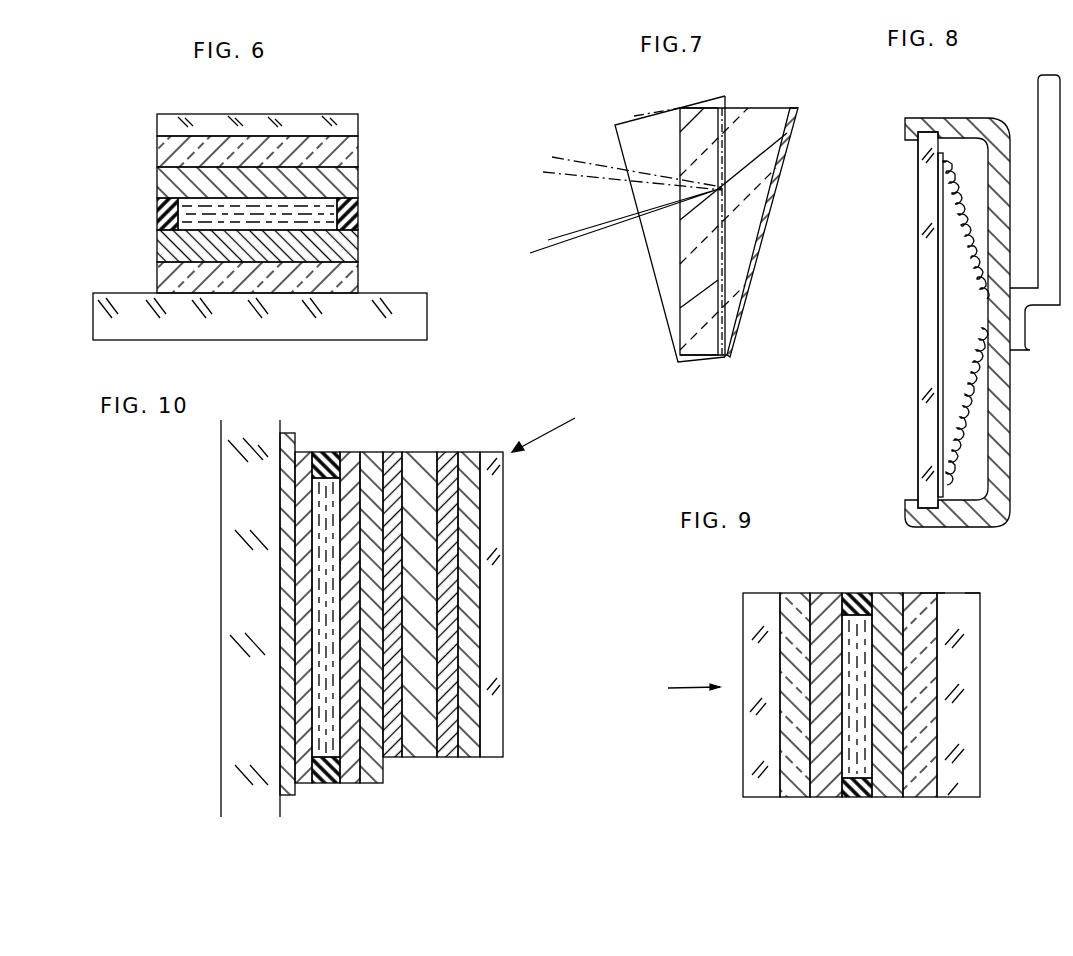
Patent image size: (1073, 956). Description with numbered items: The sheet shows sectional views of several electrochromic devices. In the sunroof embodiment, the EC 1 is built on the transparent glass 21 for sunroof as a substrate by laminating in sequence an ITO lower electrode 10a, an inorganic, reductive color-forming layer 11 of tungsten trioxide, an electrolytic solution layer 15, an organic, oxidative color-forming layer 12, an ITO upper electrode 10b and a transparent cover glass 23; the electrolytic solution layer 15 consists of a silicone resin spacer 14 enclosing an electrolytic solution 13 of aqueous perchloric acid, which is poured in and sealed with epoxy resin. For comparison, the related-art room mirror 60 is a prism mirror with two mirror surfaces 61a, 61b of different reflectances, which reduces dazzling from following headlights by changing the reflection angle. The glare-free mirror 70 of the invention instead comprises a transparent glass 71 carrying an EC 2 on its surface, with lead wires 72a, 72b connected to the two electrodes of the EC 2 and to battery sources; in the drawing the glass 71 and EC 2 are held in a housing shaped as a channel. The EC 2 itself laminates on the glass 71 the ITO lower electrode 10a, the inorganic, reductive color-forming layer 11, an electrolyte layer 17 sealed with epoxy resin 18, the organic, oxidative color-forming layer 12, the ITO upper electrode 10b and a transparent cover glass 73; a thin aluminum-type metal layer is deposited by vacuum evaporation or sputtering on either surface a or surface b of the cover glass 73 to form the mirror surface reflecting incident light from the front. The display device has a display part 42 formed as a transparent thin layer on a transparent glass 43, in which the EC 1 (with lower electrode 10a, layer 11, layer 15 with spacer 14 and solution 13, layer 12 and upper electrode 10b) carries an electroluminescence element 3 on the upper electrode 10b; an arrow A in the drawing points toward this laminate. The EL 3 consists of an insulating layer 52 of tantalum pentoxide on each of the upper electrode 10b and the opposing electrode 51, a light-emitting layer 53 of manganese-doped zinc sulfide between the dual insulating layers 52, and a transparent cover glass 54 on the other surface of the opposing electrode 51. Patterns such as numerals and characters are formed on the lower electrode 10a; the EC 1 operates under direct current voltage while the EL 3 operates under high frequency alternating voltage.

In FIG. 10, the EC 1 is at (341, 613).
In FIG. 8, the EC 2 is at (943, 314).
In FIG. 10, the electroluminescence element 3 is at (440, 585).
In FIG. 6, the ITO lower electrode 10a is at (358, 274).
In FIG. 10, the ITO lower electrode 10a is at (290, 796).
In FIG. 9, the ITO lower electrode 10a is at (785, 796).
In FIG. 6, the ITO upper electrode 10b is at (358, 149).
In FIG. 10, the ITO upper electrode 10b is at (375, 785).
In FIG. 9, the ITO upper electrode 10b is at (917, 796).
In FIG. 6, the inorganic, reductive color-forming layer 11 is at (354, 242).
In FIG. 10, the inorganic, reductive color-forming layer 11 is at (304, 785).
In FIG. 9, the inorganic, reductive color-forming layer 11 is at (824, 796).
In FIG. 6, the organic, oxidative color-forming layer 12 is at (354, 179).
In FIG. 10, the organic, oxidative color-forming layer 12 is at (350, 785).
In FIG. 9, the organic, oxidative color-forming layer 12 is at (892, 796).
In FIG. 6, the electrolytic solution 13 is at (257, 204).
In FIG. 10, the electrolytic solution 13 is at (326, 617).
In FIG. 6, the spacer 14 is at (354, 211).
In FIG. 10, the spacer 14 is at (328, 785).
In FIG. 6, the electrolytic solution layer 15 is at (253, 201).
In FIG. 10, the electrolytic solution layer 15 is at (326, 619).
In FIG. 9, the electrolyte layer 17 is at (868, 713).
In FIG. 9, the epoxy resin 18 is at (856, 796).
In FIG. 6, the transparent glass for sunroof 21 is at (427, 313).
In FIG. 6, the transparent cover glass 23 is at (269, 114).
In FIG. 10, the display part 42 is at (221, 500).
In FIG. 10, the transparent glass 43 is at (221, 634).
In FIG. 10, the opposing electrode 51 is at (479, 757).
In FIG. 10, the insulating layer 52 is at (394, 757).
In FIG. 10, the light-emitting layer 53 is at (421, 757).
In FIG. 10, the transparent cover glass 54 is at (503, 617).
In FIG. 7, the room mirror 60 is at (748, 108).
In FIG. 7, the mirror surface 61a is at (678, 325).
In FIG. 7, the mirror surface 61b is at (748, 290).
In FIG. 8, the glare-free mirror 70 is at (957, 113).
In FIG. 8, the transparent glass 71 is at (918, 315).
In FIG. 9, the transparent glass 71 is at (758, 595).
In FIG. 8, the lead wire 72a is at (962, 184).
In FIG. 8, the lead wire 72b is at (960, 440).
In FIG. 9, the transparent cover glass 73 is at (967, 796).
In FIG. 10, the viewing direction A is at (558, 424).
In FIG. 9, the surface a is at (933, 593).
In FIG. 9, the surface b is at (977, 593).